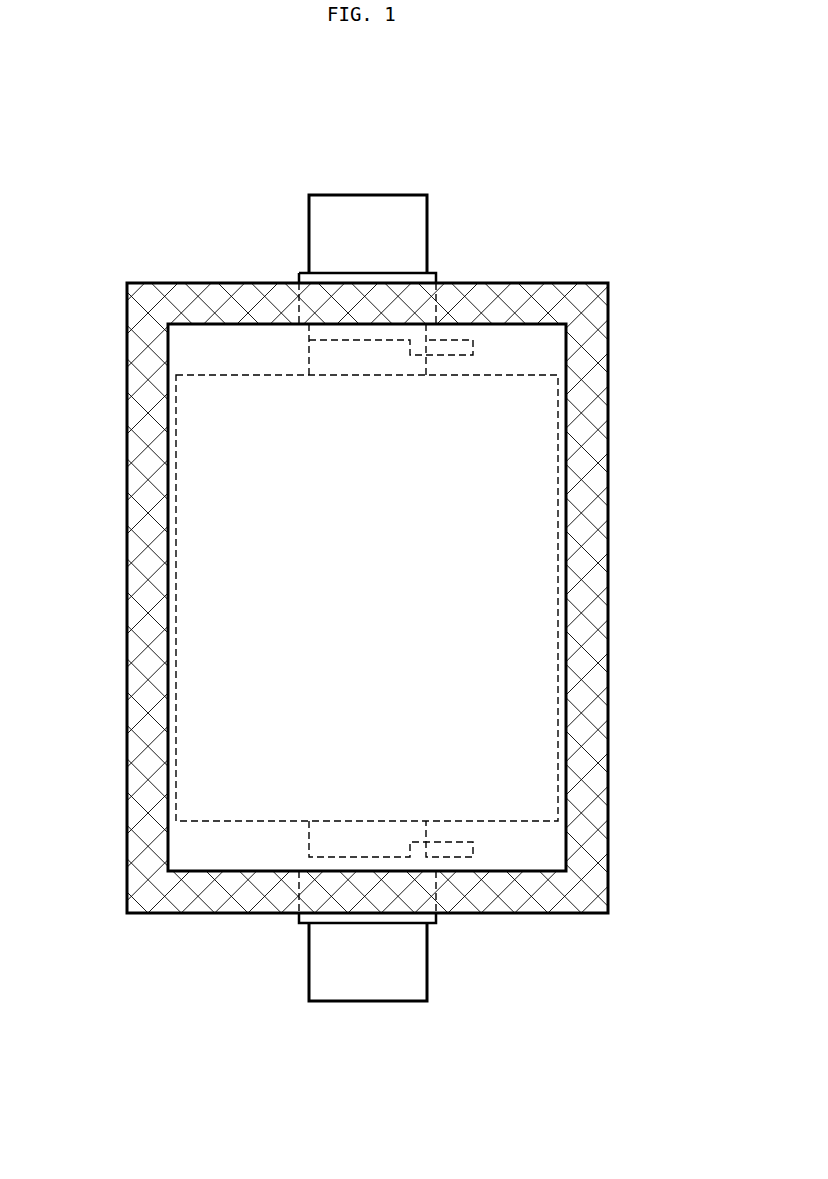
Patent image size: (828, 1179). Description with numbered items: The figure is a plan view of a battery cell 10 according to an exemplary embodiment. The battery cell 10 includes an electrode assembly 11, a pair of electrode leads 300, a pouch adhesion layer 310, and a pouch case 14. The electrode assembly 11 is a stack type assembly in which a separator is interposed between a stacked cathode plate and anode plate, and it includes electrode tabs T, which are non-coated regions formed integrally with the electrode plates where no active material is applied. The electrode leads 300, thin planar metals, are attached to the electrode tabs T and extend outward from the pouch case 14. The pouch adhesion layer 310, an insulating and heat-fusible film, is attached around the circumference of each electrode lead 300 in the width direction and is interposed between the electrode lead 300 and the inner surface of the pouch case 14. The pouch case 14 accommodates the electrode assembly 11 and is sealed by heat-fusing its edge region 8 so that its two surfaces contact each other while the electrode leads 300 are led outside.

The battery cell 10 is at (428, 164).
The edge region 8 is at (603, 448).
The pouch case 14 is at (545, 348).
The electrode assembly 11 is at (225, 357).
The electrode tabs T is at (323, 365).
The electrode leads 300 is at (427, 236).
The pouch adhesion layer 310 is at (397, 279).